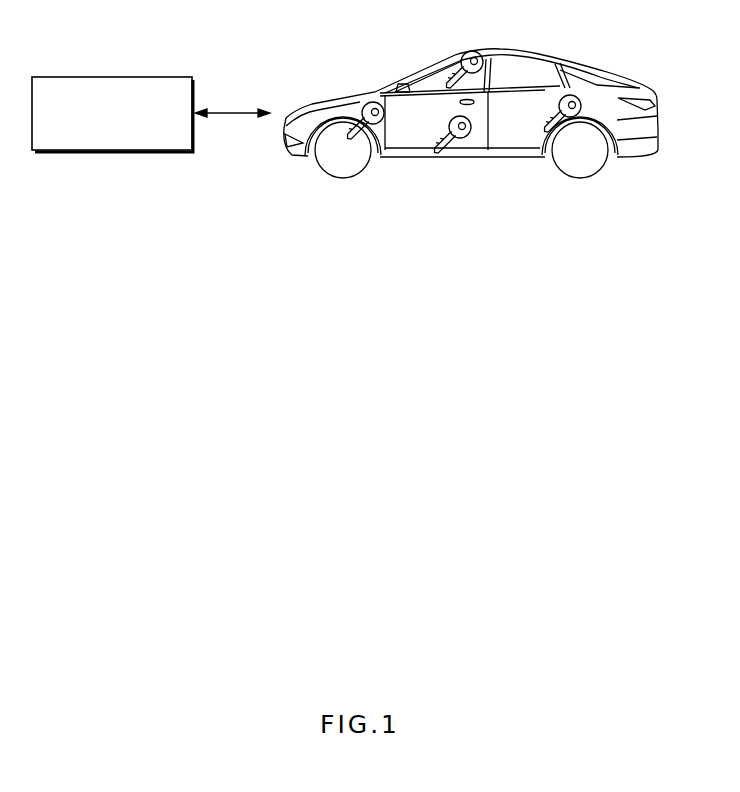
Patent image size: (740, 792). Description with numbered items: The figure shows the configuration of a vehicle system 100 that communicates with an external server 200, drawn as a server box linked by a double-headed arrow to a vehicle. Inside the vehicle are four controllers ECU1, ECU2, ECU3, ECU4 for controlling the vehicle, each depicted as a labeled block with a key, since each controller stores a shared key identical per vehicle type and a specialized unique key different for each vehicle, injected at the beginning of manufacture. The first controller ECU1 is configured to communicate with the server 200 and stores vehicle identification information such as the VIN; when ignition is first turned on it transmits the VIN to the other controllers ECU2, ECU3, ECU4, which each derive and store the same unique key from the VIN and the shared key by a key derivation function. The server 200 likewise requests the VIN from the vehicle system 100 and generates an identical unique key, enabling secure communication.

The vehicle system 100 is at (471, 93).
The external server 200 is at (111, 75).
The first controller ECU1 is at (346, 114).
The second controller ECU2 is at (445, 61).
The third controller ECU3 is at (434, 127).
The fourth controller ECU4 is at (544, 105).